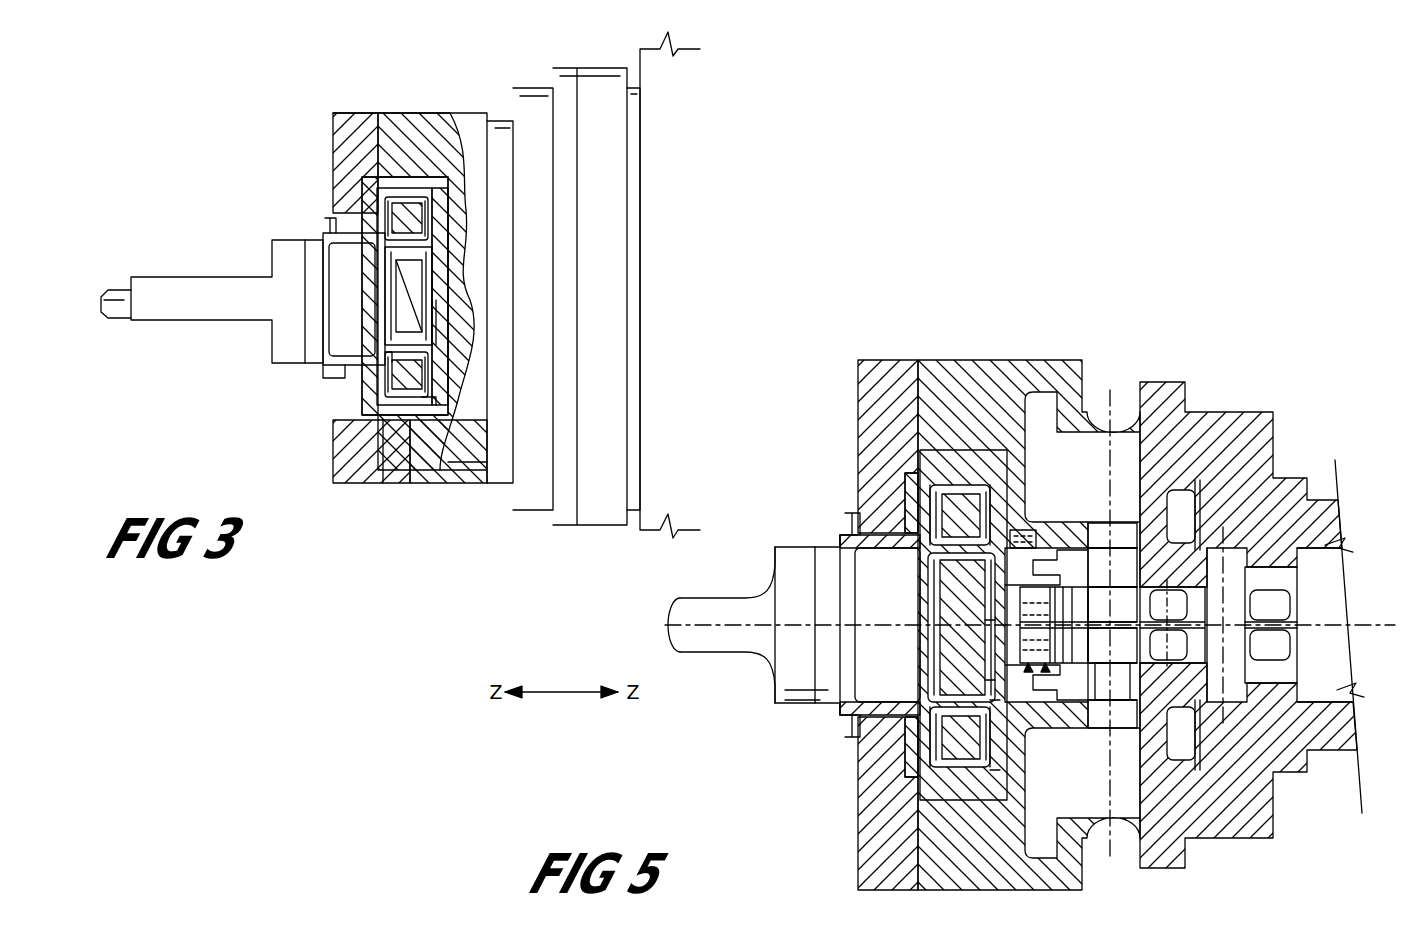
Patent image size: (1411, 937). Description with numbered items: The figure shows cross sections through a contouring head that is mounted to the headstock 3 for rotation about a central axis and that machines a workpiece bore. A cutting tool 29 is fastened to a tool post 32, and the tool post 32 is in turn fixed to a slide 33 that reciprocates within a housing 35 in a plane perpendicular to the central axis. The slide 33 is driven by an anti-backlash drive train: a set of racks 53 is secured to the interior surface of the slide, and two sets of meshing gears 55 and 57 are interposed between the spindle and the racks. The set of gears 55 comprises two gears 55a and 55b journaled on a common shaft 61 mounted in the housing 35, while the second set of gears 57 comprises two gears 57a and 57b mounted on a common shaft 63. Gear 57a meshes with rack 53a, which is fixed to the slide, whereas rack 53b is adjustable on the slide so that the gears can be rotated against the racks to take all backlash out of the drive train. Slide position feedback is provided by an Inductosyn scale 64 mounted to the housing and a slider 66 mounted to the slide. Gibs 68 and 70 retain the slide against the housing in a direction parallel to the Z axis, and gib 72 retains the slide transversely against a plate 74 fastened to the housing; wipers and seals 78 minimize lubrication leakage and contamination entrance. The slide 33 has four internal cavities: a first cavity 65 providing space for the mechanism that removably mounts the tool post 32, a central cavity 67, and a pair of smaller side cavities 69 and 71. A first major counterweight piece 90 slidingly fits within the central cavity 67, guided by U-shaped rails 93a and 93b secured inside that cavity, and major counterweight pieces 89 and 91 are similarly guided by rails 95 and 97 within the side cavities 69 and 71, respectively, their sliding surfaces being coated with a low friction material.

In FIG. 3, the headstock 3 is at (628, 62).
In FIG. 3, the cutting tool 29 is at (103, 298).
In FIG. 3, the tool post 32 is at (197, 288).
In FIG. 5, the tool post 32 is at (722, 645).
In FIG. 3, the slide 33 is at (376, 410).
In FIG. 5, the housing 35 is at (1337, 681).
In FIG. 5, the racks 53 is at (1048, 664).
In FIG. 5, the rack 53a is at (1112, 567).
In FIG. 5, the rack 53b is at (1048, 664).
In FIG. 5, the set of gears 55 is at (1293, 620).
In FIG. 5, the gear 55a is at (1265, 599).
In FIG. 5, the gear 55b is at (1265, 646).
In FIG. 5, the set of gears 57 is at (1150, 664).
In FIG. 5, the gear 57a is at (1142, 604).
In FIG. 5, the gear 57b is at (1142, 651).
In FIG. 5, the common shaft 61 is at (1236, 662).
In FIG. 5, the common shaft 63 is at (1120, 705).
In FIG. 5, the Inductosyn scale 64 is at (1035, 578).
In FIG. 3, the first cavity 65 is at (345, 313).
In FIG. 5, the first cavity 65 is at (856, 592).
In FIG. 5, the slider 66 is at (1043, 576).
In FIG. 3, the central cavity 67 is at (378, 335).
In FIG. 5, the central cavity 67 is at (940, 612).
In FIG. 5, the gib 68 is at (912, 487).
In FIG. 3, the side cavity 69 is at (386, 215).
In FIG. 5, the side cavity 69 is at (1000, 496).
In FIG. 5, the gib 70 is at (905, 748).
In FIG. 3, the side cavity 71 is at (425, 366).
In FIG. 5, the side cavity 71 is at (995, 740).
In FIG. 5, the gib 72 is at (918, 460).
In FIG. 5, the plate 74 is at (918, 792).
In FIG. 3, the wipers and seals 78 is at (405, 422).
In FIG. 3, the major counterweight piece 89 is at (370, 193).
In FIG. 5, the major counterweight piece 89 is at (975, 495).
In FIG. 3, the first major counterweight piece 90 is at (400, 287).
In FIG. 5, the first major counterweight piece 90 is at (938, 651).
In FIG. 3, the major counterweight piece 91 is at (385, 378).
In FIG. 5, the major counterweight piece 91 is at (961, 737).
In FIG. 3, the U-shaped rail 93a is at (436, 268).
In FIG. 5, the U-shaped rail 93a is at (940, 593).
In FIG. 3, the U-shaped rail 93b is at (436, 320).
In FIG. 5, the U-shaped rail 93b is at (940, 683).
In FIG. 3, the rail 95 is at (403, 215).
In FIG. 5, the rail 95 is at (953, 490).
In FIG. 3, the rail 97 is at (386, 360).
In FIG. 5, the rail 97 is at (985, 790).